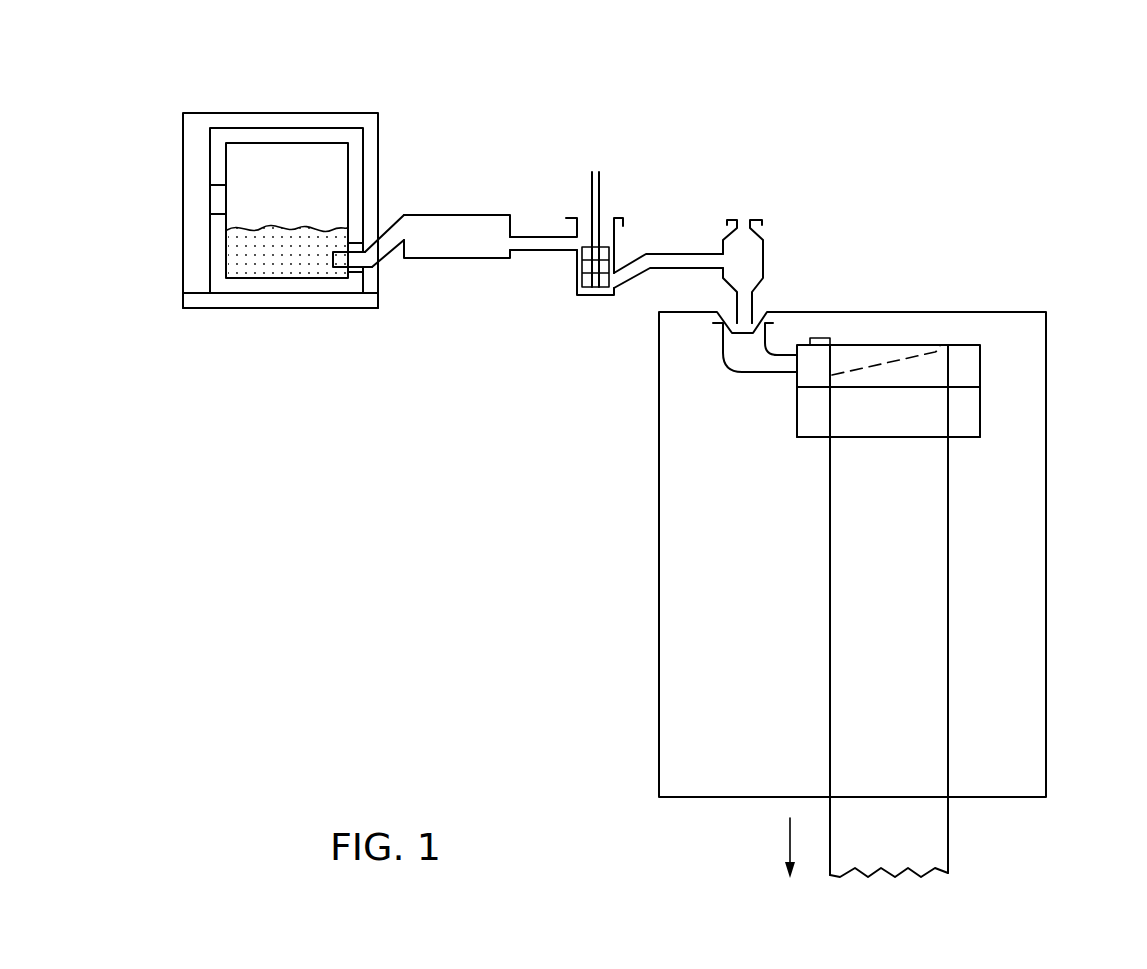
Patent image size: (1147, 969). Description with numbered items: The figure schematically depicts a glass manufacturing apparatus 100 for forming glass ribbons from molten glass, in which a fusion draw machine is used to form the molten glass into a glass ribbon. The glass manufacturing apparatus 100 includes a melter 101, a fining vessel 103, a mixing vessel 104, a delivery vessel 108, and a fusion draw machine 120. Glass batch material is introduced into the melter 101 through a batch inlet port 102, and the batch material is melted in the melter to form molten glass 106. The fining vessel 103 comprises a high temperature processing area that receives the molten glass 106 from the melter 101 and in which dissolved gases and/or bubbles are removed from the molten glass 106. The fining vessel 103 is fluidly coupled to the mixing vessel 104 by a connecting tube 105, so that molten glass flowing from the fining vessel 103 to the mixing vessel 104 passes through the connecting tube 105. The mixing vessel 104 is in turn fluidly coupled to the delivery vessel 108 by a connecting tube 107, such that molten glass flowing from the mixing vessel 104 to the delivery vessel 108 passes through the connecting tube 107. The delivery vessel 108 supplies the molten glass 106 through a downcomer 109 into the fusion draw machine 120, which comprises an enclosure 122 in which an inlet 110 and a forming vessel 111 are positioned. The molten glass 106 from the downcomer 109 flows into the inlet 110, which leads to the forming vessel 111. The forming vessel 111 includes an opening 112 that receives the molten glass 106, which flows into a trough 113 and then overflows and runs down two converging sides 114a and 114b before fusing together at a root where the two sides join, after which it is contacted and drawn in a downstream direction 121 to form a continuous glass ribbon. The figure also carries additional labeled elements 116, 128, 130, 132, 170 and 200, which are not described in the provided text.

The glass manufacturing apparatus 100 is at (1030, 200).
The melter 101 is at (370, 100).
The batch inlet port 102 is at (212, 200).
The fining vessel 103 is at (443, 215).
The mixing vessel 104 is at (618, 238).
The connecting tube 105 is at (530, 252).
The molten glass 106 is at (315, 226).
The connecting tube 107 is at (678, 270).
The delivery vessel 108 is at (765, 256).
The downcomer 109 is at (752, 300).
The inlet 110 is at (734, 373).
The forming vessel 111 is at (981, 364).
The opening 112 is at (796, 382).
The trough 113 is at (892, 353).
The converging side 114a is at (843, 420).
The converging side 114b is at (981, 403).
The mold assembly 116 is at (868, 438).
The fusion draw machine 120 is at (1040, 297).
The downstream direction 121 is at (789, 843).
The enclosure 122 is at (658, 440).
The cast strand 128 is at (948, 830).
The enclosure 130 is at (195, 113).
The furnace 132 is at (189, 164).
The base 170 is at (270, 312).
The heater wall 200 is at (272, 128).